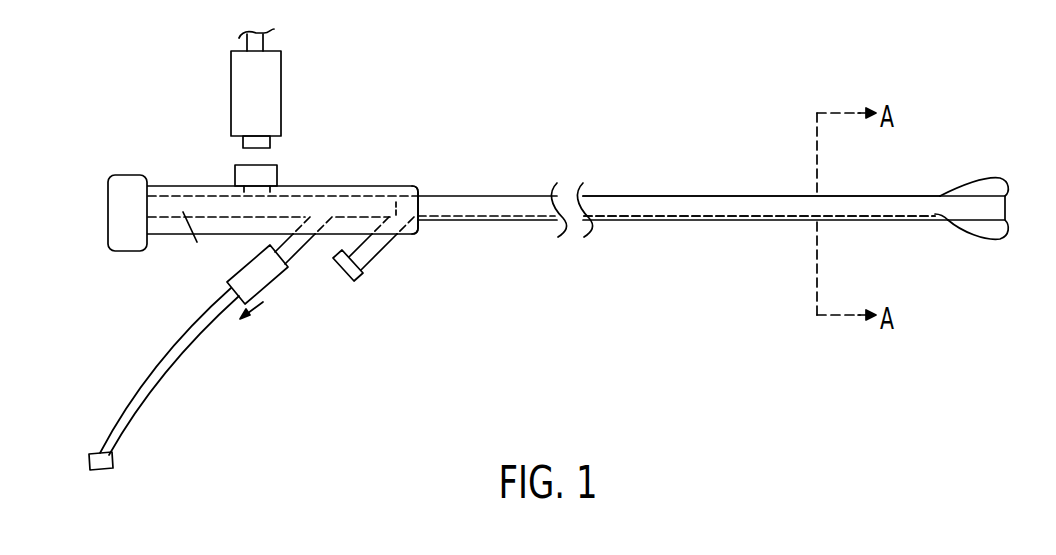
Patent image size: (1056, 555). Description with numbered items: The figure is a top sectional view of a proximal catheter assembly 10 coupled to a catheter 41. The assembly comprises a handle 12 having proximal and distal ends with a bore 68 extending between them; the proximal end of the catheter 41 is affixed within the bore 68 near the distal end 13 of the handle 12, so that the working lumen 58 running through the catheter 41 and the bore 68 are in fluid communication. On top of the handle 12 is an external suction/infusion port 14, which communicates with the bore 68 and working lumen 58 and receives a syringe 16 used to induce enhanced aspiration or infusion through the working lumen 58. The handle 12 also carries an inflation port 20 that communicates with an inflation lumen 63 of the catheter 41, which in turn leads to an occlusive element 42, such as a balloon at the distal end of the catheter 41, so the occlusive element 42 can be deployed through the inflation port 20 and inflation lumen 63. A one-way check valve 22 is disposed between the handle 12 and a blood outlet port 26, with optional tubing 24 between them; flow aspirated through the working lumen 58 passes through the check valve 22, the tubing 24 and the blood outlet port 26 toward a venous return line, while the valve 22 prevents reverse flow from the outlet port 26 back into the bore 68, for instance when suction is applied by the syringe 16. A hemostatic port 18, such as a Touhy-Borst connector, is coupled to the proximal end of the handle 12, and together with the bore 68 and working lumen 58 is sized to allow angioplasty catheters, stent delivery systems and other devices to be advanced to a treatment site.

The proximal catheter assembly 10 is at (210, 172).
The handle 12 is at (351, 186).
The distal end of handle 13 is at (418, 189).
The external suction/infusion port 14 is at (279, 172).
The syringe 16 is at (283, 83).
The hemostatic port 18 is at (124, 175).
The inflation port 20 is at (361, 278).
The one-way check valve 22 is at (273, 286).
The tubing 24 is at (168, 360).
The blood outlet port 26 is at (113, 463).
The catheter 41 is at (728, 191).
The occlusive element 42 is at (991, 240).
The working lumen 58 is at (647, 198).
The inflation lumen 63 is at (656, 218).
The bore 68 is at (193, 246).